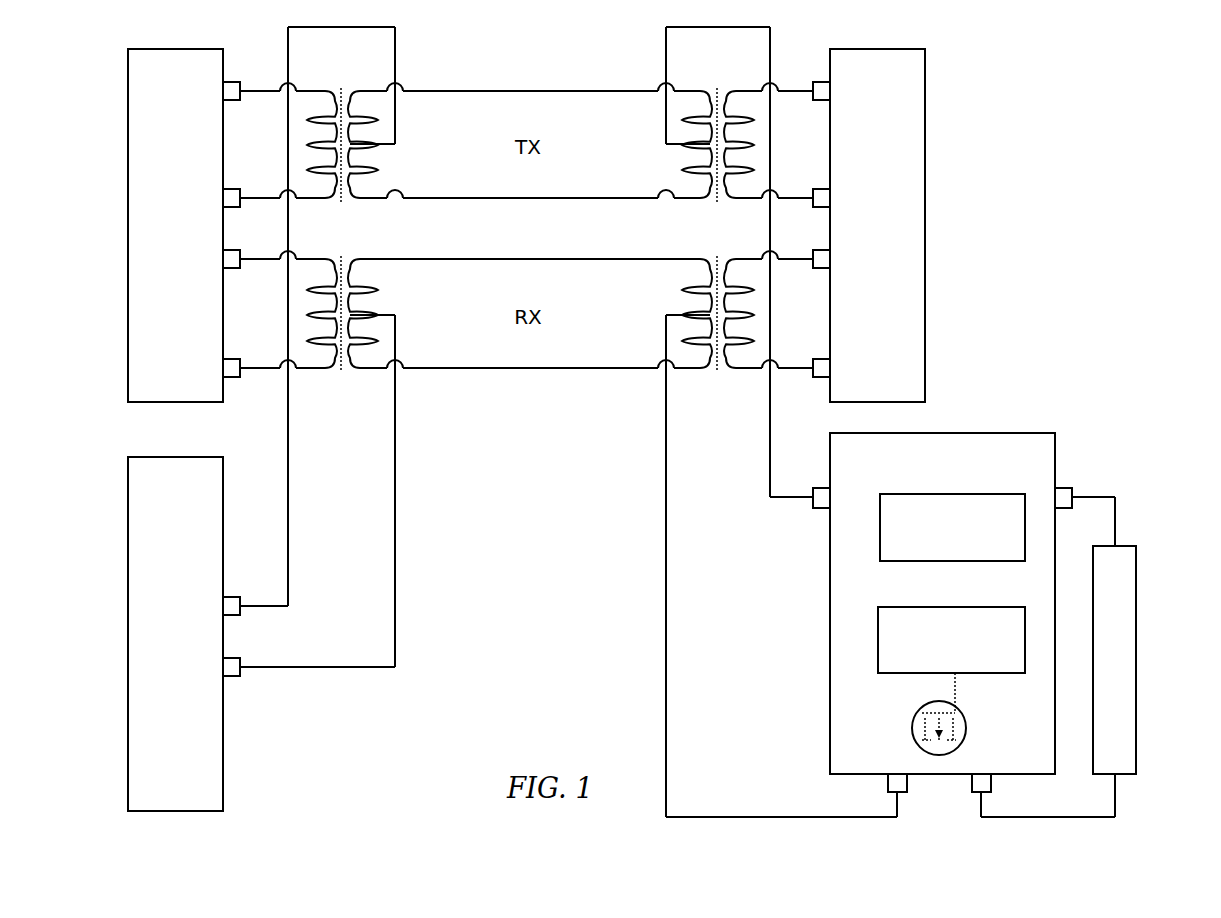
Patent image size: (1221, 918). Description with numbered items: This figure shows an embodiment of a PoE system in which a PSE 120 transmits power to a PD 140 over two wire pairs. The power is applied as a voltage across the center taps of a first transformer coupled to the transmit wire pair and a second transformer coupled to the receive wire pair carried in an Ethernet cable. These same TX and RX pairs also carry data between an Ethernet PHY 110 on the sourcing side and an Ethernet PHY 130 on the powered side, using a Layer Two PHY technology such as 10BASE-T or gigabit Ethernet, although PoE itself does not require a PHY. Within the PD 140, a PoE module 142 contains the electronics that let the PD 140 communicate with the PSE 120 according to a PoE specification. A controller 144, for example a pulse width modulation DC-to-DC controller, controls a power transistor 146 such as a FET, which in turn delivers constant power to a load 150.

The Ethernet PHY 110 is at (128, 227).
The PSE 120 is at (128, 633).
The Ethernet PHY 130 is at (925, 222).
The PD 140 is at (830, 605).
The PoE module 142 is at (922, 494).
The controller 144 is at (890, 604).
The power transistor 146 is at (915, 727).
The load 150 is at (1136, 607).